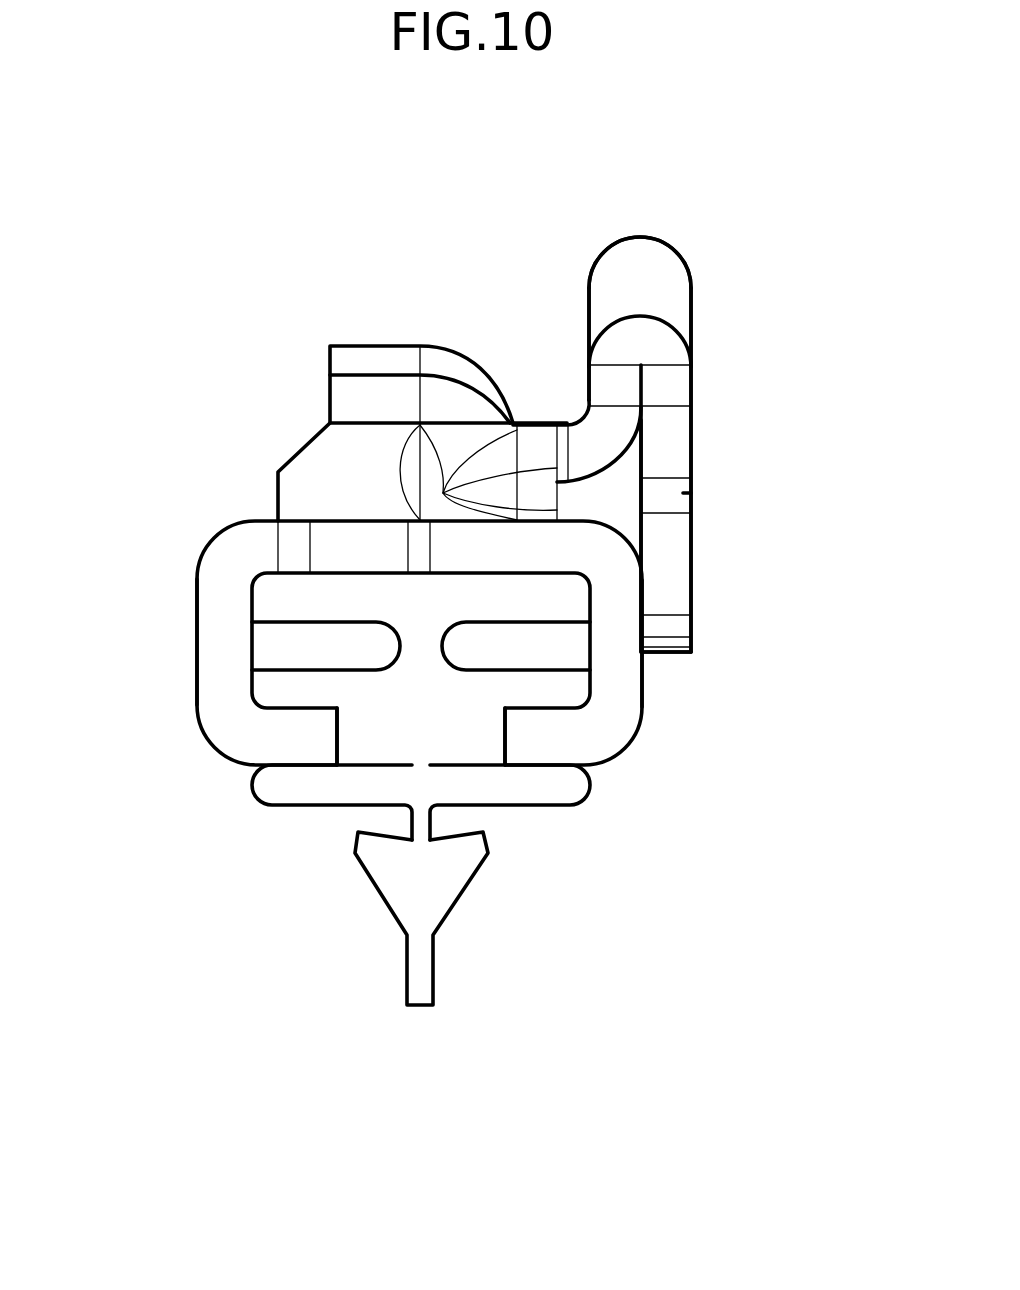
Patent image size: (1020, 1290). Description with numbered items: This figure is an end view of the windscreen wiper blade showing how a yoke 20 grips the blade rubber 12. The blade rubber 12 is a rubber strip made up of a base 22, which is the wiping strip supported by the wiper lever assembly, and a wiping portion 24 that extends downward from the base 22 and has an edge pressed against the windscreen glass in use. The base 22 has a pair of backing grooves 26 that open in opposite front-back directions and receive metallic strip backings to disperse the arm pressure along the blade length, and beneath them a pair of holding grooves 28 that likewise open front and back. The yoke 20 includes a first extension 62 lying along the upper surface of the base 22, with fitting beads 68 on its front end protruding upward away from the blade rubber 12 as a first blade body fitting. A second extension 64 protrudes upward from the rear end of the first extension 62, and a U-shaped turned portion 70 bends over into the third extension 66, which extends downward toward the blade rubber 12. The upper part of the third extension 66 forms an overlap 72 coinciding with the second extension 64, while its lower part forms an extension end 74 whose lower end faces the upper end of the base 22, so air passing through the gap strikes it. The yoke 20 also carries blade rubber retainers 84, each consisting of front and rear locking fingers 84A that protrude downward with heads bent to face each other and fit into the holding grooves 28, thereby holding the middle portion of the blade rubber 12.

The blade rubber 12 is at (420, 1010).
The yoke 20 is at (642, 237).
The base 22 is at (267, 595).
The wiping portion 24 is at (387, 913).
The backing grooves 26 is at (290, 668).
The holding grooves 28 is at (290, 758).
The first extension 62 is at (293, 452).
The second extension 64 is at (588, 300).
The third extension 66 is at (686, 493).
The fitting beads 68 is at (378, 346).
The turned portion 70 is at (686, 252).
The overlap 72 is at (693, 432).
The extension end 74 is at (693, 592).
The blade rubber retainers 84 is at (197, 681).
The locking fingers 84A is at (310, 733).